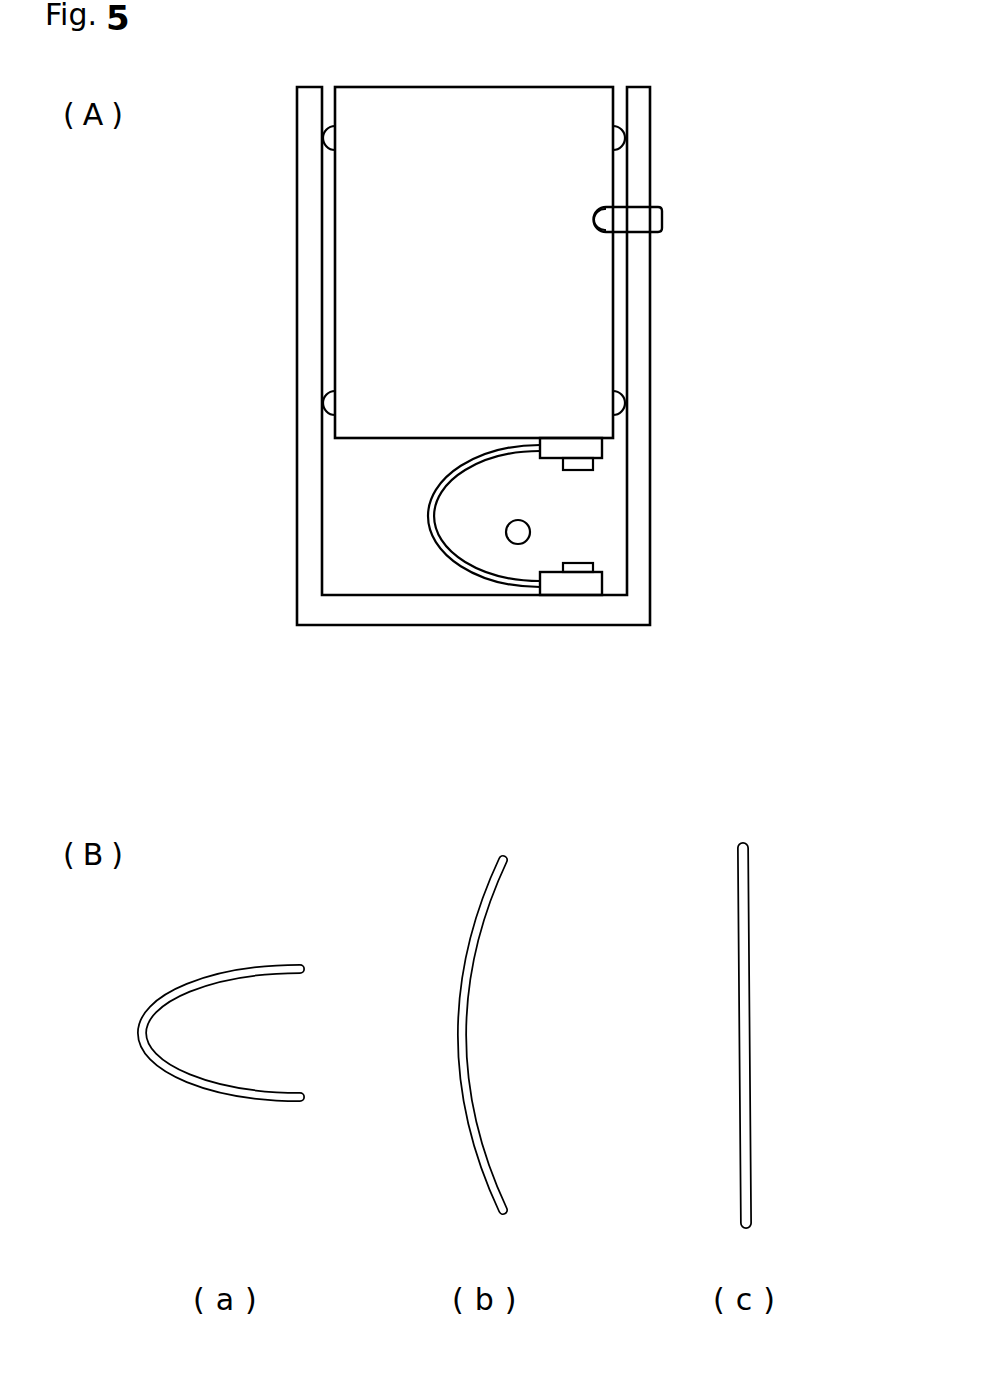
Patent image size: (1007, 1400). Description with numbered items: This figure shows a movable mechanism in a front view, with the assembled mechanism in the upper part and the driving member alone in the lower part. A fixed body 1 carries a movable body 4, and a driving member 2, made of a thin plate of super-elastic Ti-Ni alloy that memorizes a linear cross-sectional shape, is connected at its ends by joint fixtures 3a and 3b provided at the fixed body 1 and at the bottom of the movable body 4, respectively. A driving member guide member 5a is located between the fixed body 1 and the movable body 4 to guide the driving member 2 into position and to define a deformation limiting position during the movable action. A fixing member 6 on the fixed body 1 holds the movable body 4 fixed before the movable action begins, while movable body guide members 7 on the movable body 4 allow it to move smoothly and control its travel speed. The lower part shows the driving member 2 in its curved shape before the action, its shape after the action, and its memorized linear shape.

The fixed body 1 is at (641, 540).
The driving member 2 is at (428, 513).
The joint fixture 3a is at (565, 585).
The joint fixture 3b is at (583, 448).
The movable body 4 is at (577, 300).
The driving member guide member 5a is at (527, 526).
The fixing member 6 is at (665, 218).
The movable body guide member 7 is at (322, 138).